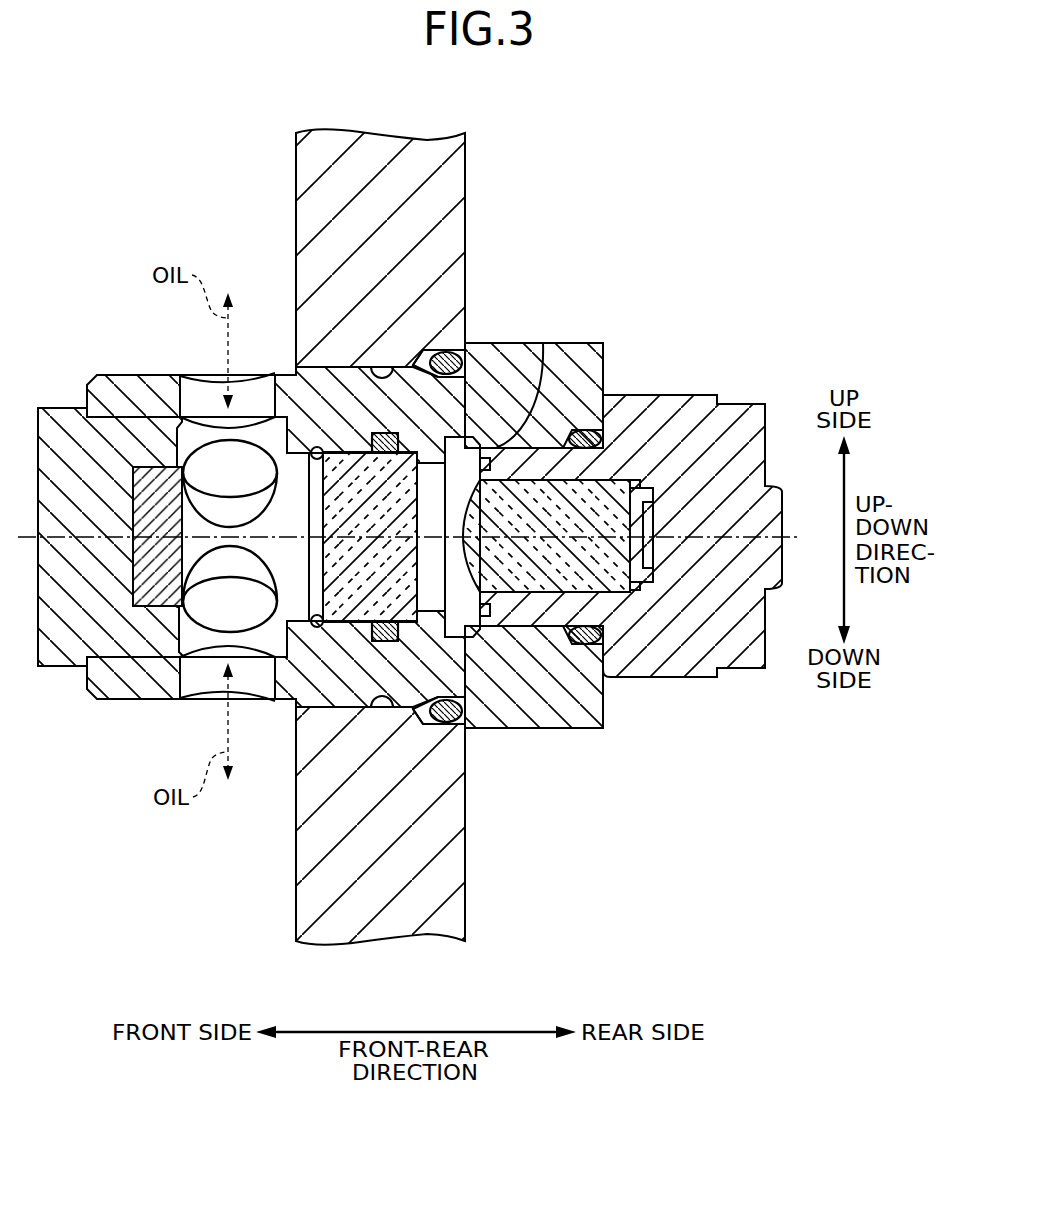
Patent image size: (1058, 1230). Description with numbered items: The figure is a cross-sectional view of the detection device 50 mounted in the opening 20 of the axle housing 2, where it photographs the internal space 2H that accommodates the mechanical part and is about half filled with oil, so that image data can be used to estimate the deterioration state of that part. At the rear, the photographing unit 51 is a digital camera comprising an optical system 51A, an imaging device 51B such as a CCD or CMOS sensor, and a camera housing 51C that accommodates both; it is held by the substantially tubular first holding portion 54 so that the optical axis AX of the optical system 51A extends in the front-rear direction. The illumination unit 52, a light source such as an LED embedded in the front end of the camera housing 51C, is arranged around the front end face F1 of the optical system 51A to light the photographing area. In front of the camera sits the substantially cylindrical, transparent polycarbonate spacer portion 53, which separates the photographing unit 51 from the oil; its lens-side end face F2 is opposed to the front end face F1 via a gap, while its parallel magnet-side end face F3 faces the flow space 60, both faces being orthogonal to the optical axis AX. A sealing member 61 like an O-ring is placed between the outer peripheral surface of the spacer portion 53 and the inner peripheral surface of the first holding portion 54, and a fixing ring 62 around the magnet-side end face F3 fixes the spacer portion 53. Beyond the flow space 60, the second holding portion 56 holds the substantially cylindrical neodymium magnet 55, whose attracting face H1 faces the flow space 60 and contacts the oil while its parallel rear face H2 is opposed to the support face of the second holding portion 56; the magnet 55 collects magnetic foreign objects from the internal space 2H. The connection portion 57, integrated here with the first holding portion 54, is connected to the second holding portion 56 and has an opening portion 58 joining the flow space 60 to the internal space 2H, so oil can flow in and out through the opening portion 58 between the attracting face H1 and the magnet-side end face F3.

The axle housing 2 is at (467, 172).
The internal space 2H is at (152, 222).
The opening 20 is at (397, 367).
The detection device 50 is at (100, 313).
The photographing unit 51 is at (760, 395).
The optical system 51A is at (618, 584).
The imaging device 51B is at (640, 548).
The camera housing 51C is at (698, 680).
The illumination unit 52 is at (518, 378).
The spacer portion 53 is at (352, 452).
The first holding portion 54 is at (328, 360).
The magnet 55 is at (147, 473).
The second holding portion 56 is at (62, 408).
The connection portion 57 is at (196, 375).
The opening portion 58 is at (264, 372).
The flow space 60 is at (238, 516).
The sealing member 61 is at (387, 641).
The fixing ring 62 is at (318, 627).
The optical axis AX is at (611, 537).
The front end face F1 is at (463, 625).
The lens-side end face F2 is at (428, 621).
The magnet-side end face F3 is at (296, 707).
The attracting face H1 is at (208, 552).
The rear face H2 is at (182, 560).